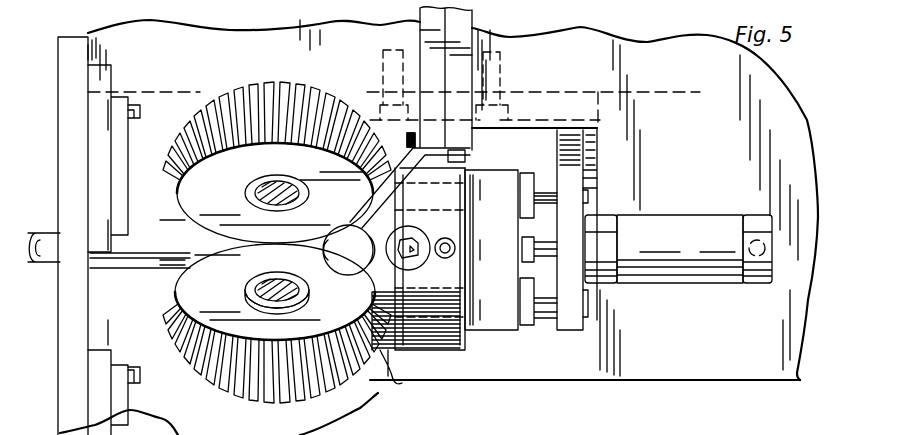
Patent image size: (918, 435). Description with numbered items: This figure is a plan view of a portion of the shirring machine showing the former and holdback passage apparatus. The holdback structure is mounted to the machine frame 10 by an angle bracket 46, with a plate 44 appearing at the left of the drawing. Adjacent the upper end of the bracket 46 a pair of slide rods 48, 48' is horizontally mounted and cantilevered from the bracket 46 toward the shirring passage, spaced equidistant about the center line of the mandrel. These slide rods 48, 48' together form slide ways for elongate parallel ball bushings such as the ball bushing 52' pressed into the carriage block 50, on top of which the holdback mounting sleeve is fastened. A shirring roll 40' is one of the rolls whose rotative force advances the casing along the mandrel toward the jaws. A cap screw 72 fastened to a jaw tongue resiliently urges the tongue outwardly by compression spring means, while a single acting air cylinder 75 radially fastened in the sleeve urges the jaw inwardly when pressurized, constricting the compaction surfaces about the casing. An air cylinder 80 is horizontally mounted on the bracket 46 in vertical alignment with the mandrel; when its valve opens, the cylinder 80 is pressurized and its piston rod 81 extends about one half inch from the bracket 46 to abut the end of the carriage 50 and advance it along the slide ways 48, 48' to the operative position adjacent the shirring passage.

The machine frame 10 is at (645, 380).
The end plate 44 is at (58, 203).
The shirring roll 40' is at (286, 250).
The cap screw 72 is at (448, 258).
The single acting air cylinder 75 is at (420, 270).
The carriage block 50 is at (486, 328).
The ball bushing 52' is at (549, 175).
The piston rod 81 is at (520, 262).
The slide rod 48 is at (554, 324).
The angle bracket 46 is at (590, 322).
The slide rod 48' is at (603, 167).
The air cylinder 80 is at (702, 285).